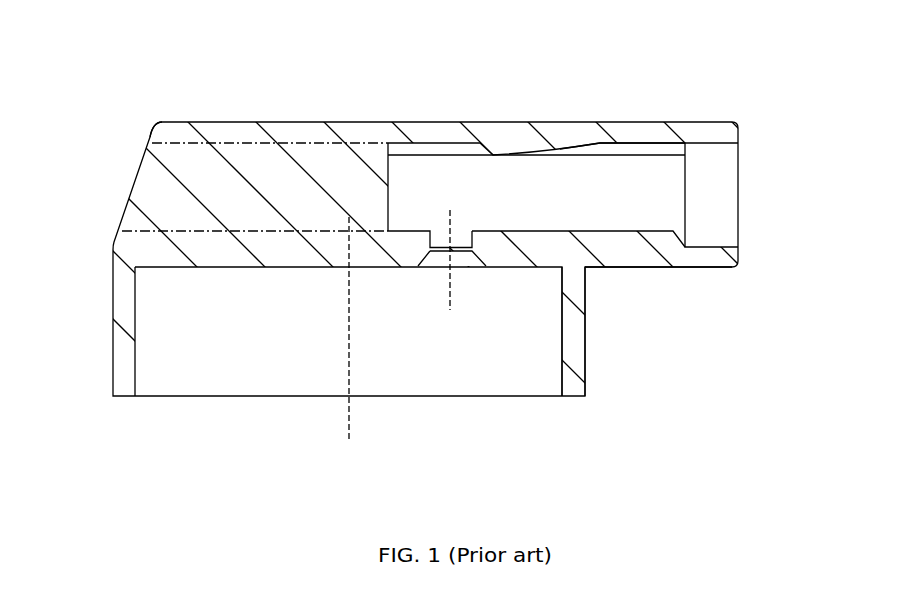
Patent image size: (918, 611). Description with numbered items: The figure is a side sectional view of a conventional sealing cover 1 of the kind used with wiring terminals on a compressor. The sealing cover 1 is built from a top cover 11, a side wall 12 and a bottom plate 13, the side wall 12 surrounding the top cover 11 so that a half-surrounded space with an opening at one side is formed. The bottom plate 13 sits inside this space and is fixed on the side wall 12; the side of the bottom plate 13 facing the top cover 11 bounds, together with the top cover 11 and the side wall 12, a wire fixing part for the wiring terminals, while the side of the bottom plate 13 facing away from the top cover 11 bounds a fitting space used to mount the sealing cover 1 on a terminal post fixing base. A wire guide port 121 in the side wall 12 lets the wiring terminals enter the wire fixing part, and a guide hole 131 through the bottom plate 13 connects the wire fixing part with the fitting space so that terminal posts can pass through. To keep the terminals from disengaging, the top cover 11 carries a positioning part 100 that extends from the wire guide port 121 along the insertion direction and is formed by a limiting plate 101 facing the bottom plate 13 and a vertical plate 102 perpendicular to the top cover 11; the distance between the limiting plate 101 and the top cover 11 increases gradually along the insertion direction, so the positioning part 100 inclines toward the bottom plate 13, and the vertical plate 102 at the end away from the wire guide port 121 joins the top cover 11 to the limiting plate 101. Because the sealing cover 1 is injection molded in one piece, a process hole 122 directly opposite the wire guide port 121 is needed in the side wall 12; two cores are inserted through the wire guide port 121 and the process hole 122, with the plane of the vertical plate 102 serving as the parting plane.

The sealing cover 1 is at (808, 85).
The top cover 11 is at (277, 115).
The side wall 12 is at (100, 303).
The bottom plate 13 is at (632, 270).
The positioning part 100 is at (592, 70).
The limiting plate 101 is at (572, 153).
The vertical plate 102 is at (483, 154).
The wire guide port 121 is at (745, 210).
The process hole 122 is at (175, 142).
The guide hole 131 is at (430, 277).